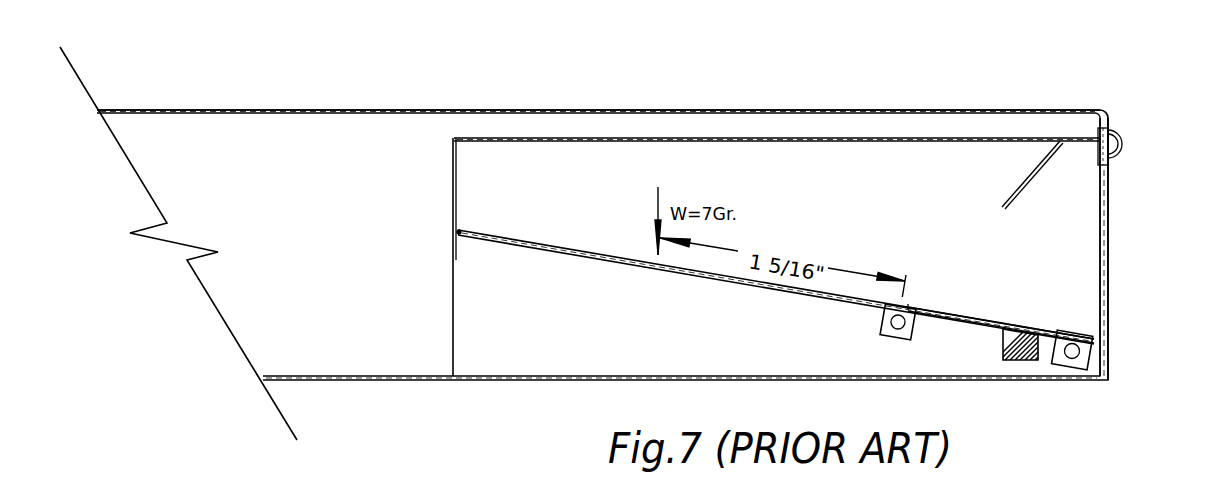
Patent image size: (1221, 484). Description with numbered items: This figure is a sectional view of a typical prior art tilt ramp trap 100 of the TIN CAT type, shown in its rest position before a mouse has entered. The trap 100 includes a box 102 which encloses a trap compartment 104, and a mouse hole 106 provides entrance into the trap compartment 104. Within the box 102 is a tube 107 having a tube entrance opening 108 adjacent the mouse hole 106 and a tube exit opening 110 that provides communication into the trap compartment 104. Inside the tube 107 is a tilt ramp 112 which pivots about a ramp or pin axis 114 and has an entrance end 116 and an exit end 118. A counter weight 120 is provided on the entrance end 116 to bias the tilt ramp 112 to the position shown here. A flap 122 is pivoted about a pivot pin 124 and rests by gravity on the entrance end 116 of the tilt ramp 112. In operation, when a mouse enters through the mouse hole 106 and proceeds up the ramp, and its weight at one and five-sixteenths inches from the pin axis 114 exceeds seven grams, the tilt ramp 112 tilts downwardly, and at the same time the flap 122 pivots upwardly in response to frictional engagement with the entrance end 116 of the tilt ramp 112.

The prior art trap 100 is at (663, 97).
The box 102 is at (495, 108).
The trap compartment 104 is at (315, 140).
The mouse hole 106 is at (1108, 345).
The tube 107 is at (828, 137).
The tube entrance opening 108 is at (1077, 218).
The tube exit opening 110 is at (452, 258).
The tilt ramp 112 is at (737, 284).
The pin axis 114 is at (880, 325).
The entrance end 116 is at (990, 325).
The exit end 118 is at (463, 228).
The counter weight 120 is at (1003, 352).
The flap 122 is at (975, 318).
The pivot pin 124 is at (1075, 352).